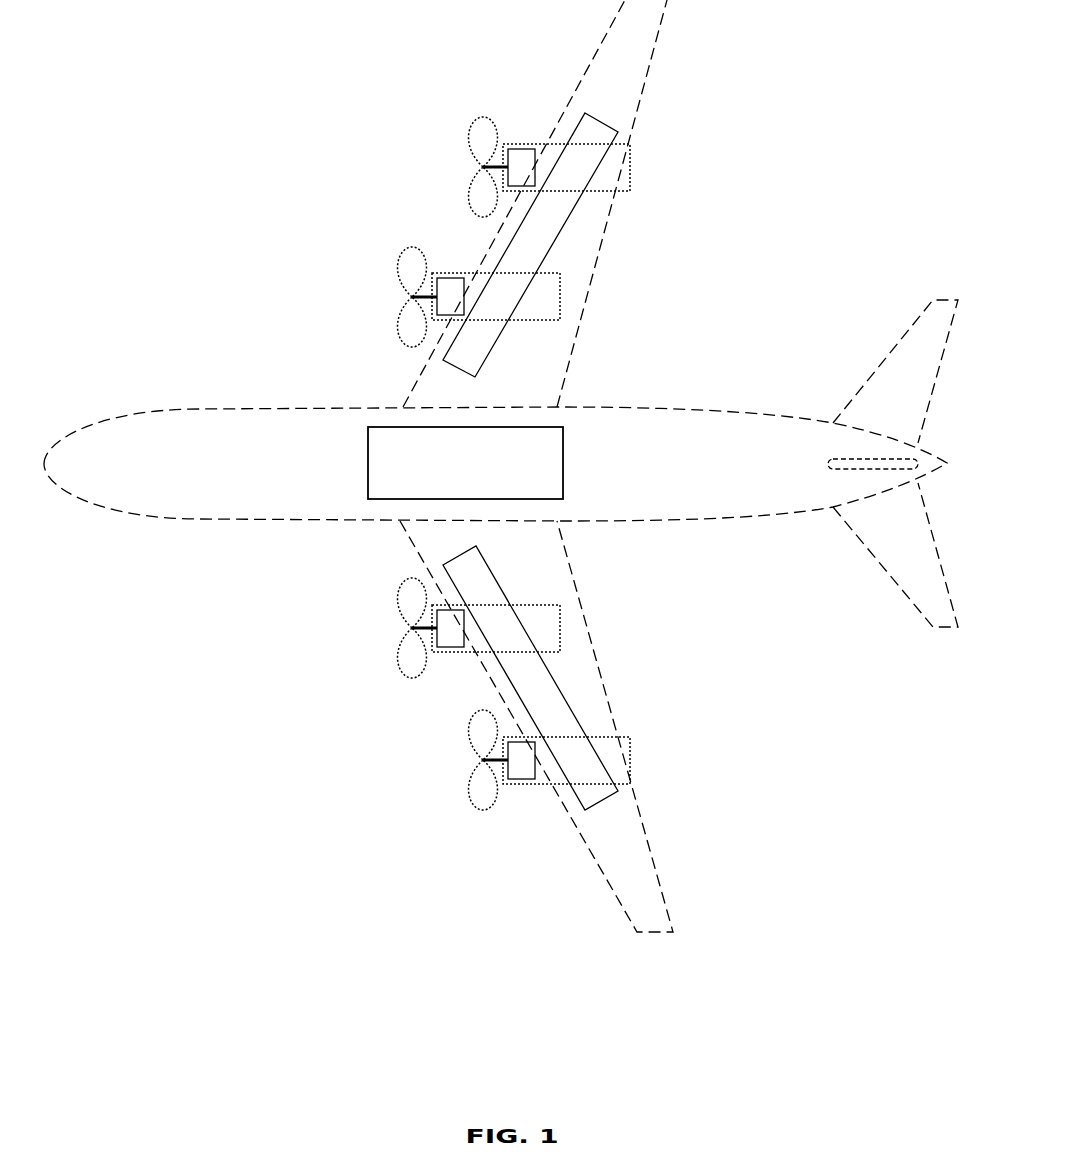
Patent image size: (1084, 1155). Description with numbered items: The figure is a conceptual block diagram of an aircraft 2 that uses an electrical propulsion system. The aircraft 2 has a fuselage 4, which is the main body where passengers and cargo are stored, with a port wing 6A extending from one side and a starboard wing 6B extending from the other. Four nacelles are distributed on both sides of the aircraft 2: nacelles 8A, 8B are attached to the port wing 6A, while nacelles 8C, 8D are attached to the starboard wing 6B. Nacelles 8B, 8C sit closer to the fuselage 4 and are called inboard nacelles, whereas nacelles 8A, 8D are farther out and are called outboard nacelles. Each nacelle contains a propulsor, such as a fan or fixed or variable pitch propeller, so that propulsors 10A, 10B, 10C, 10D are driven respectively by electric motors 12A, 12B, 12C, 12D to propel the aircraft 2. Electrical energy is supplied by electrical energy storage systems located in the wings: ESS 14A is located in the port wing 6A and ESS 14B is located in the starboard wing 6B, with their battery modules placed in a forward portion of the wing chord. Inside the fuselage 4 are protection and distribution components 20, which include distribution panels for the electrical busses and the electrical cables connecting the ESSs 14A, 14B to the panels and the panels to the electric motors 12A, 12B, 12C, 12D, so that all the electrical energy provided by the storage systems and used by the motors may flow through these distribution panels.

The aircraft 2 is at (849, 72).
The fuselage 4 is at (206, 417).
The port wing 6A is at (638, 838).
The starboard wing 6B is at (661, 32).
The nacelle 8A is at (496, 776).
The nacelle 8B is at (432, 645).
The nacelle 8C is at (435, 280).
The nacelle 8D is at (500, 150).
The propulsor 10A is at (484, 807).
The propulsor 10B is at (412, 679).
The propulsor 10C is at (411, 247).
The propulsor 10D is at (481, 116).
The electric motor 12A is at (527, 769).
The electric motor 12B is at (455, 641).
The electric motor 12C is at (446, 288).
The electric motor 12D is at (518, 156).
The electrical energy storage system 14A is at (575, 768).
The electrical energy storage system 14B is at (590, 140).
The protection and distribution components 20 is at (465, 463).